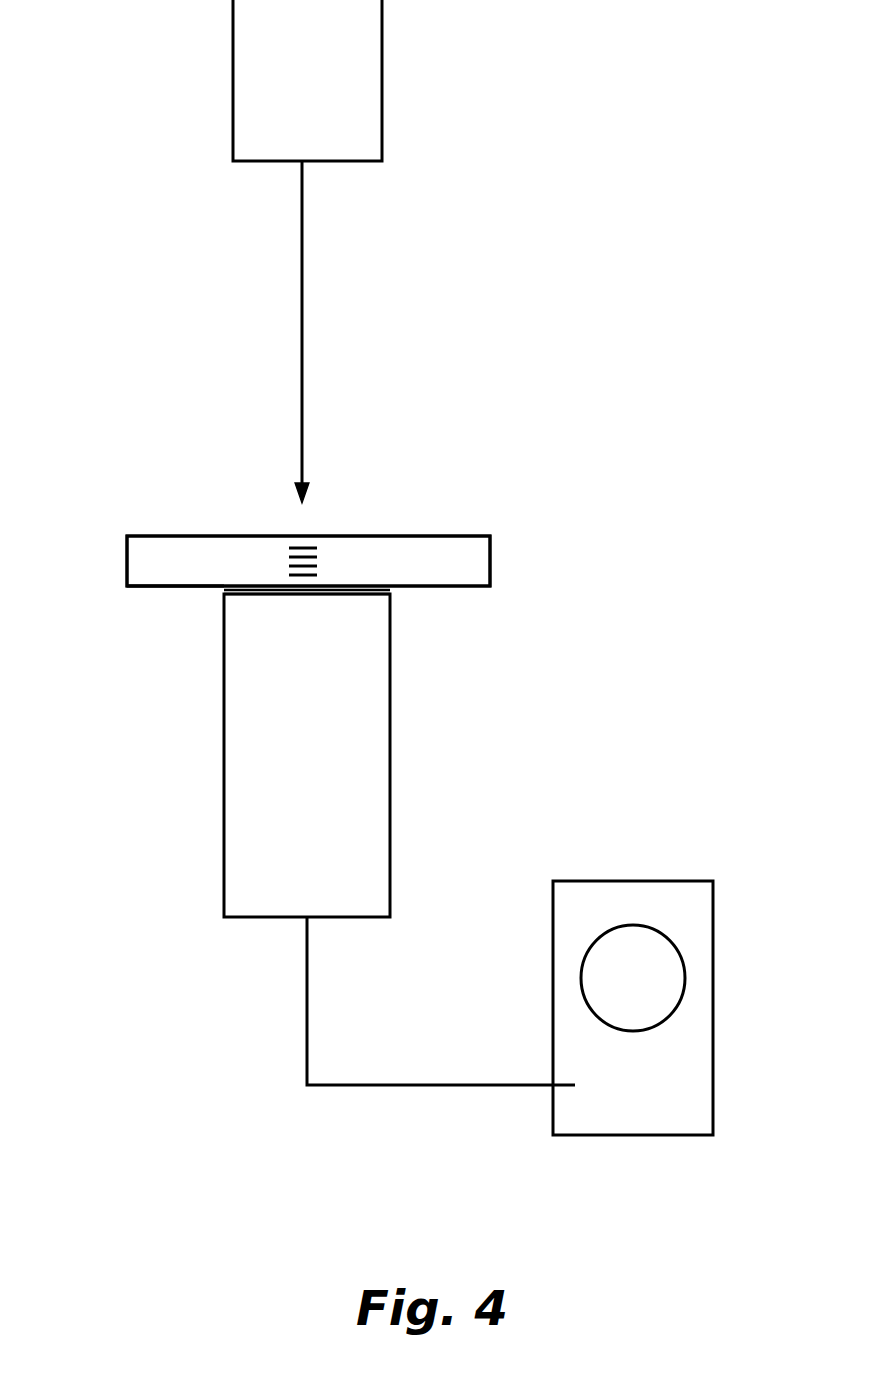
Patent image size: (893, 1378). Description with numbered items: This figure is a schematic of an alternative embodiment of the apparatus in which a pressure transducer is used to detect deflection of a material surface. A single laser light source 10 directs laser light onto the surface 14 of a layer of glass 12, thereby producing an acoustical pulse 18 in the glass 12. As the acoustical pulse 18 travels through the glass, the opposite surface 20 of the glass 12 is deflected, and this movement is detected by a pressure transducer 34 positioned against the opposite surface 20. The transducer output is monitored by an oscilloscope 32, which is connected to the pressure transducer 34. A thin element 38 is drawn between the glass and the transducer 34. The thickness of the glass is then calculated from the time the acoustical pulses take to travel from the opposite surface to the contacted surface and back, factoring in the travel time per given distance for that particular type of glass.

The laser light source 10 is at (326, 68).
The layer of glass 12 is at (221, 563).
The surface 14 is at (423, 530).
The acoustical pulse 18 is at (325, 568).
The opposite surface 20 is at (157, 590).
The oscilloscope 32 is at (714, 925).
The pressure transducer 34 is at (292, 760).
The thin layer 38 is at (226, 592).